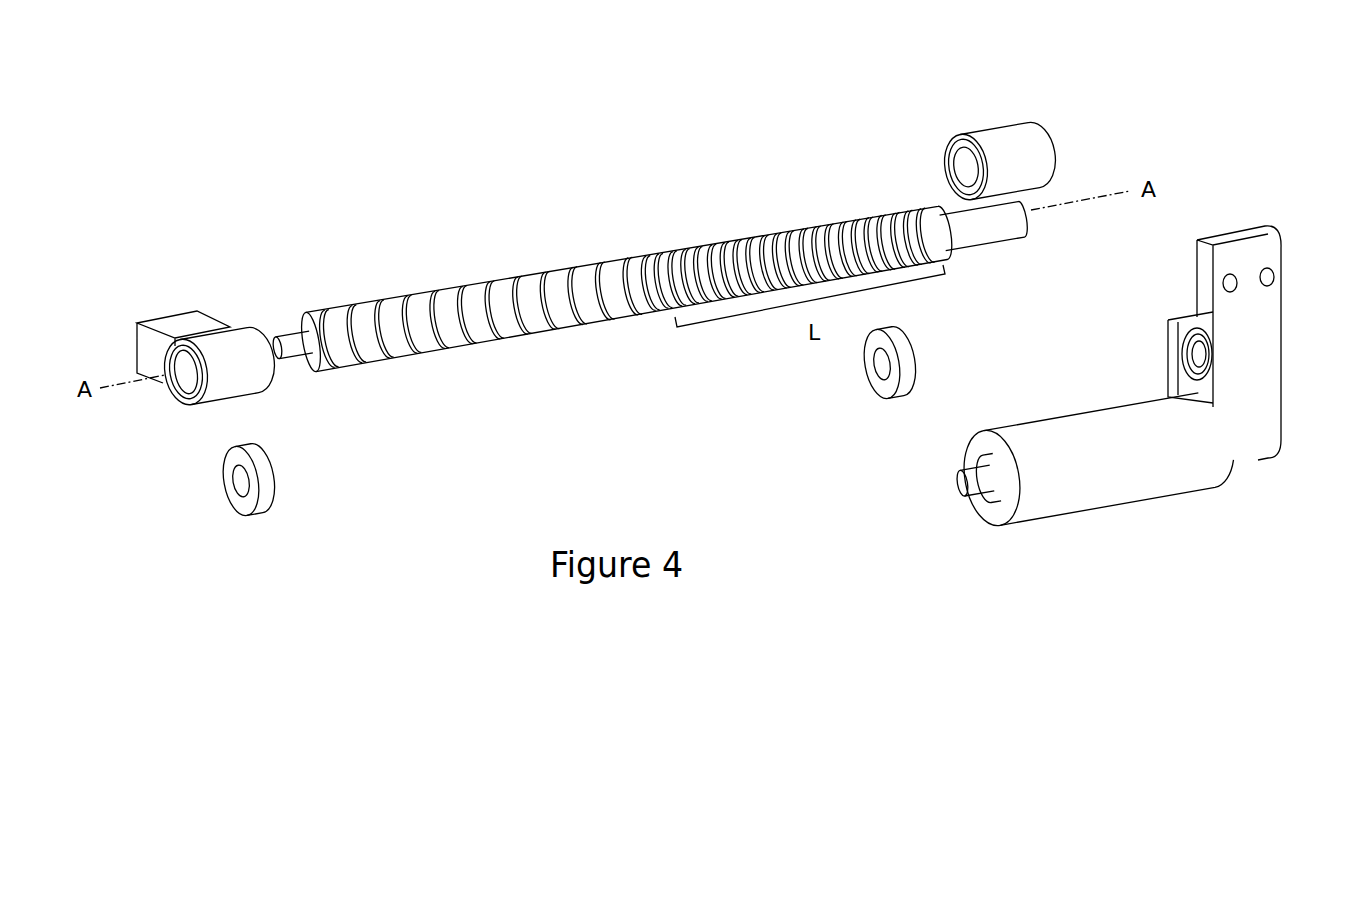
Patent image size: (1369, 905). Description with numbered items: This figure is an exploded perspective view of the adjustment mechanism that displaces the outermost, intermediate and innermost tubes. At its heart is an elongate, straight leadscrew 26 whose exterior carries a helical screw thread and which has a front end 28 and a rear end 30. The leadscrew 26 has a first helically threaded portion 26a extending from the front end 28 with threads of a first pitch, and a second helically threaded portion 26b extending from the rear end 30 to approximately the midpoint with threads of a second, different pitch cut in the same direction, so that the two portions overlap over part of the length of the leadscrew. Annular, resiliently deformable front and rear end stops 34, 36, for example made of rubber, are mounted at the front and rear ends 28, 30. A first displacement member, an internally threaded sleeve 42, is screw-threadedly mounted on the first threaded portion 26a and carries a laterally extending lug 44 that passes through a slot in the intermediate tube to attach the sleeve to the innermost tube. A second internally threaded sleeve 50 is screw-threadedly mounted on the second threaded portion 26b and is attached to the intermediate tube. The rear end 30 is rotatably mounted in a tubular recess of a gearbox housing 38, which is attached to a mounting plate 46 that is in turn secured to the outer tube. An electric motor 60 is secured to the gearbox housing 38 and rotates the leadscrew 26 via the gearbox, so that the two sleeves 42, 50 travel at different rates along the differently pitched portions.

The leadscrew 26 is at (631, 275).
The first helically threaded portion 26a is at (497, 287).
The second helically threaded portion 26b is at (867, 213).
The front end 28 is at (311, 372).
The rear end 30 is at (967, 236).
The front end stop 34 is at (240, 502).
The rear end stop 36 is at (880, 386).
The gearbox housing 38 is at (1166, 353).
The internally threaded sleeve 42 is at (242, 340).
The laterally extending lug 44 is at (166, 323).
The mounting plate 46 is at (1258, 415).
The internally threaded sleeve 50 is at (1000, 137).
The electric motor 60 is at (1122, 460).